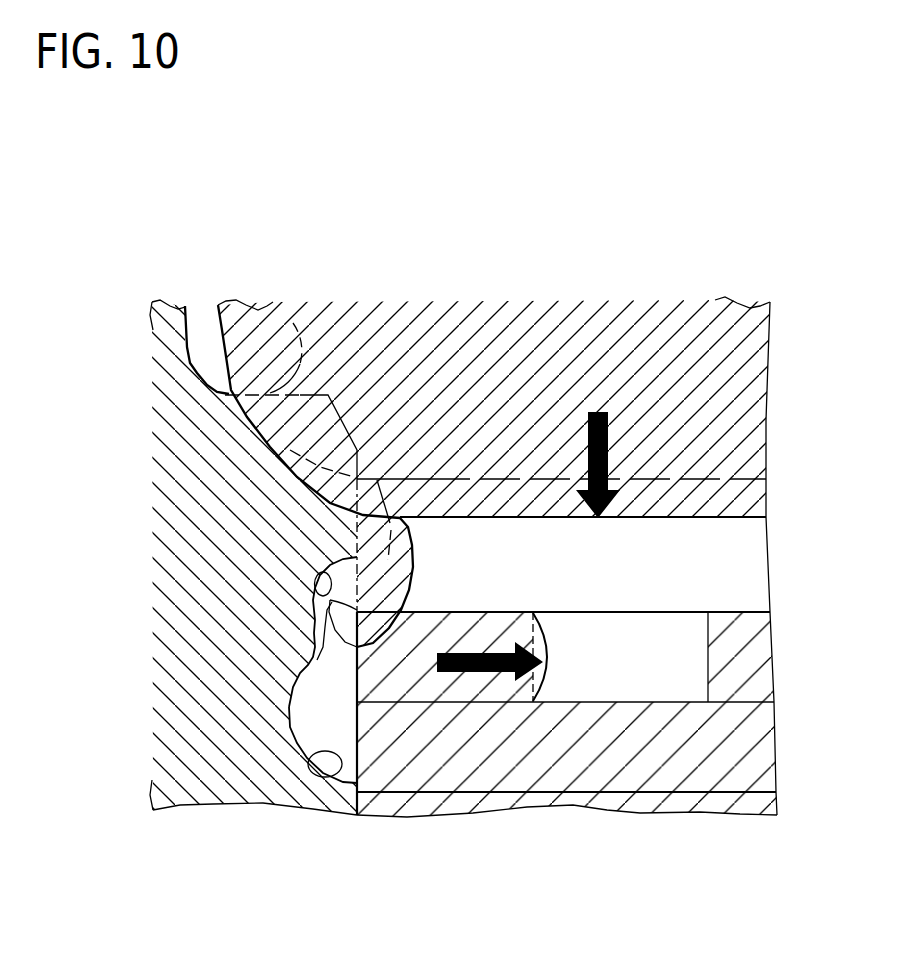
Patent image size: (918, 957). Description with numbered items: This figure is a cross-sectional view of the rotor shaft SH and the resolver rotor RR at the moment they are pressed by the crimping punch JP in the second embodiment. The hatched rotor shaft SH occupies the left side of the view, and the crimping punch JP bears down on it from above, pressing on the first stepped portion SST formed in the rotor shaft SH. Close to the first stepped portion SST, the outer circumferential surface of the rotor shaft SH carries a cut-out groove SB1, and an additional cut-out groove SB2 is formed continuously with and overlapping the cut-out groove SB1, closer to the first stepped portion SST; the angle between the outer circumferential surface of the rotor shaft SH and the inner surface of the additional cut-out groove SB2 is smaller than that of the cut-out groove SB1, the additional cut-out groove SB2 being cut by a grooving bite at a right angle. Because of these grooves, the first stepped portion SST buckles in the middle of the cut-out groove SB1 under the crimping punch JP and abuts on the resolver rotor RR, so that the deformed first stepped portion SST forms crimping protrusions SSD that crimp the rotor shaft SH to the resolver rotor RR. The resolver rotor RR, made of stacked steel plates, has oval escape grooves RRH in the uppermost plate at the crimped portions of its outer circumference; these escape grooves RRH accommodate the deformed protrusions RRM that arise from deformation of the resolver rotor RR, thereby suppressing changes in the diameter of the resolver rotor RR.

The rotor shaft SH is at (160, 485).
The crimping punch JP is at (353, 303).
The first stepped portion SST is at (292, 318).
The crimping protrusions SSD is at (412, 537).
The resolver rotor RR is at (500, 617).
The deformed protrusions RRM is at (547, 645).
The escape grooves RRH is at (707, 658).
The cut-out groove SB1 is at (338, 778).
The additional cut-out groove SB2 is at (315, 588).